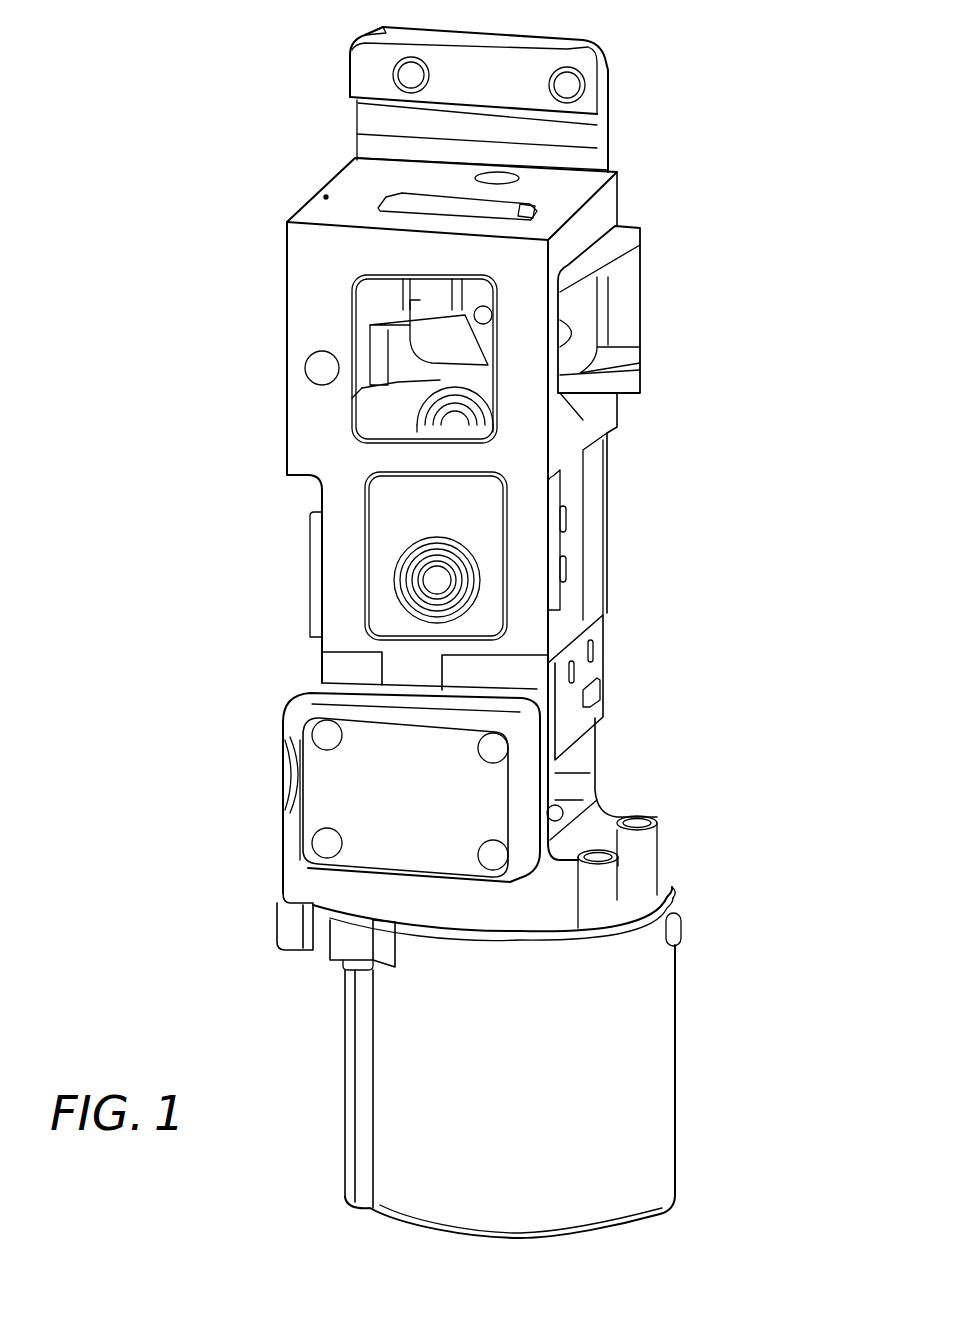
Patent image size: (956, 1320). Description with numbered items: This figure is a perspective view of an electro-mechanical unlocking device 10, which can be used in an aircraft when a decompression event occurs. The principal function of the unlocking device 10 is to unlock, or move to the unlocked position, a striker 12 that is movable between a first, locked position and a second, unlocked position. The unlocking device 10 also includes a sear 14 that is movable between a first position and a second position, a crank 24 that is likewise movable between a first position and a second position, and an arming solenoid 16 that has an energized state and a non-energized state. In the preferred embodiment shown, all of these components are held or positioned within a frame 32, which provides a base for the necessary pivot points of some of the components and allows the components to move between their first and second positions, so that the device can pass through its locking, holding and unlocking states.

The electro-mechanical unlocking device 10 is at (747, 93).
The frame 32 is at (310, 243).
The striker 12 is at (637, 245).
The sear 14 is at (393, 355).
The crank 24 is at (458, 421).
The arming solenoid 16 is at (662, 1048).